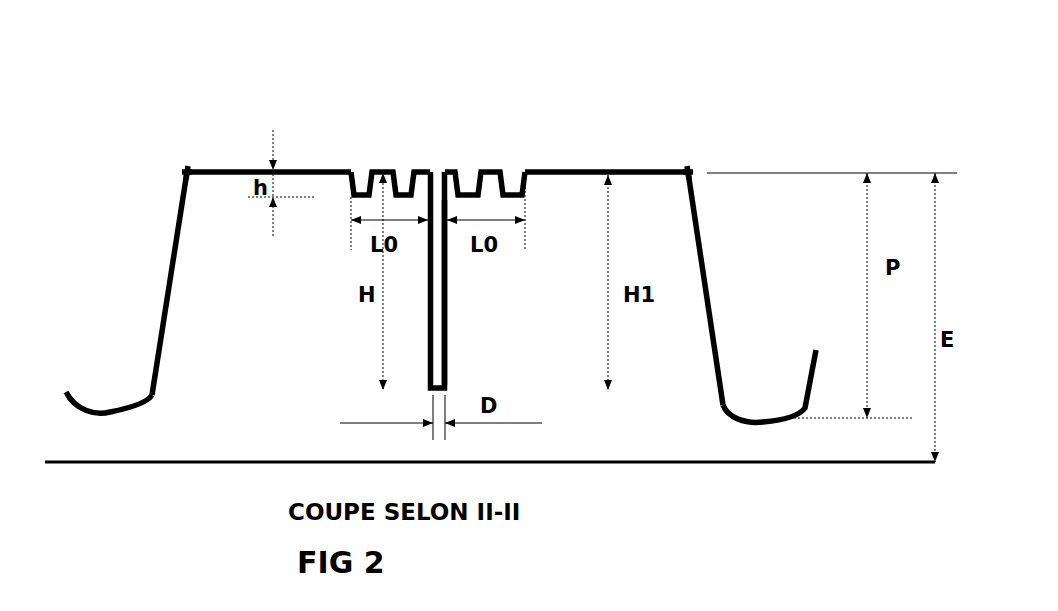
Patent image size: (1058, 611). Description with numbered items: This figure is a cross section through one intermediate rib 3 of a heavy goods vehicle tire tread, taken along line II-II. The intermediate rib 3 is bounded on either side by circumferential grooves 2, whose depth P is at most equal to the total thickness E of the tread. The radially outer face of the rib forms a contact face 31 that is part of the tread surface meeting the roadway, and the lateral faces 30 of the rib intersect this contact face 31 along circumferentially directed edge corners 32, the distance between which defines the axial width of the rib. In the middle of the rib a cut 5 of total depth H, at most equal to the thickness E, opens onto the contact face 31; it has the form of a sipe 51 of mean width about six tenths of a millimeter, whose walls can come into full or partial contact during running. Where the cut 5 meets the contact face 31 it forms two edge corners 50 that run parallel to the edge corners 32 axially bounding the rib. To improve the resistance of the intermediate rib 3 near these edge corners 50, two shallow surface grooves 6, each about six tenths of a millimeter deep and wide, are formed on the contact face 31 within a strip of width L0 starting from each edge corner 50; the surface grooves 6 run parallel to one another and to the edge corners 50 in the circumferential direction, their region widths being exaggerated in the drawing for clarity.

The circumferential groove 2 is at (760, 368).
The intermediate rib 3 is at (267, 287).
The cut 5 is at (446, 273).
The surface groove 6 is at (405, 180).
The lateral face 30 is at (148, 350).
The contact face 31 is at (586, 162).
The edge corner 32 is at (187, 168).
The edge corner 50 is at (445, 170).
The sipe 51 is at (446, 340).